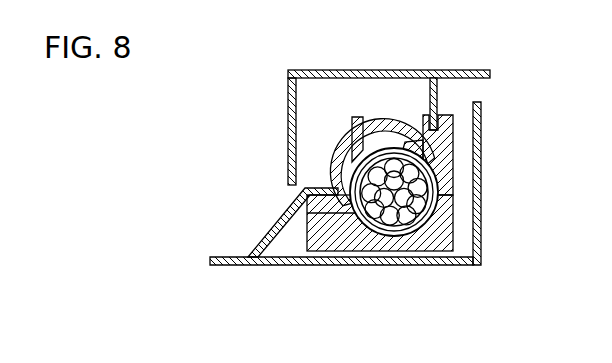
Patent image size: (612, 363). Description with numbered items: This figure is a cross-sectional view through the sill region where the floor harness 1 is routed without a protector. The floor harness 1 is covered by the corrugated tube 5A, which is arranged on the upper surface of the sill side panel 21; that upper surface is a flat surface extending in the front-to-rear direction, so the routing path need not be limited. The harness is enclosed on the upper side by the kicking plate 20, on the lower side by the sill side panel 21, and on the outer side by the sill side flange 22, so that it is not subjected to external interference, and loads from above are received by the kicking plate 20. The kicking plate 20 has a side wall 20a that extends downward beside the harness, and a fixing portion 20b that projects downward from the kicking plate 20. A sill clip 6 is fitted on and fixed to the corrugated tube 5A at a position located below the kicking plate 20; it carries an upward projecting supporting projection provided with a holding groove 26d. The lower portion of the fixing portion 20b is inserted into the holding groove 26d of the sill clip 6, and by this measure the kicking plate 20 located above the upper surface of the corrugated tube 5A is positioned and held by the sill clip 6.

The kicking plate 20 is at (382, 96).
The side wall of housing 20a is at (289, 121).
The fixing portion 20b is at (438, 94).
The holding groove 26d is at (457, 128).
The sill side flange 22 is at (481, 191).
The sill side panel 21 is at (405, 266).
The sill clip 6 is at (433, 220).
The corrugated tube 5A is at (441, 236).
The floor harness 1 is at (362, 225).